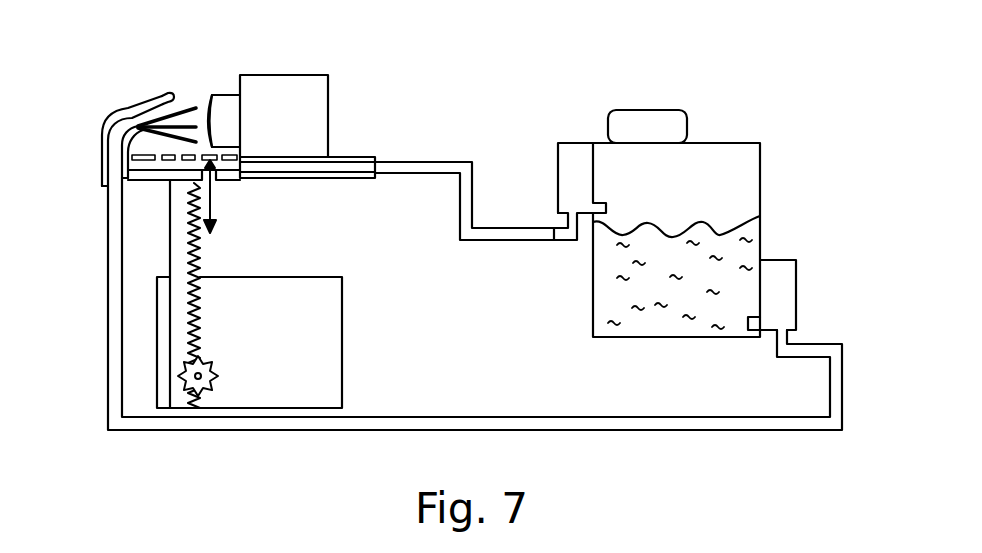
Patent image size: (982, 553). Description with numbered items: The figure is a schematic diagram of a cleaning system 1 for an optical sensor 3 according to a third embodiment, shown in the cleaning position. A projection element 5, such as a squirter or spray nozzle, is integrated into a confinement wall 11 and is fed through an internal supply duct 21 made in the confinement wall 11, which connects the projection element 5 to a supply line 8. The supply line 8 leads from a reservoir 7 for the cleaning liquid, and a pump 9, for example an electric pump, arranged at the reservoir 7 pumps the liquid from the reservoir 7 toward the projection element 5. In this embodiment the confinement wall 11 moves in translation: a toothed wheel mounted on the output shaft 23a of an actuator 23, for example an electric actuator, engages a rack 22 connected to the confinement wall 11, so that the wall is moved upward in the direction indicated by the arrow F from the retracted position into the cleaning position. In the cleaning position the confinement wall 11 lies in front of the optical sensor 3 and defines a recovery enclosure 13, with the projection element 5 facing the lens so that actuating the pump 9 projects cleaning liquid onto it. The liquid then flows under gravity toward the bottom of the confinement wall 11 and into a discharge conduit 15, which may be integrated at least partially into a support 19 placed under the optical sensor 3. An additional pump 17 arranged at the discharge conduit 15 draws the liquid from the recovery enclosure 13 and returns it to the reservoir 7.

The cleaning system 1 is at (488, 286).
The optical sensor 3 is at (317, 107).
The projection element 5 is at (125, 120).
The reservoir 7 is at (602, 304).
The supply line 8 is at (583, 424).
The pump 9 is at (778, 270).
The confinement wall 11 is at (157, 97).
The recovery enclosure 13 is at (120, 150).
The discharge conduit 15 is at (493, 233).
The additional pump 17 is at (577, 157).
The support 19 is at (363, 178).
The internal supply duct 21 is at (132, 154).
The rack 22 is at (183, 227).
The actuator 23 is at (332, 355).
The output shaft 23a is at (187, 368).
The arrow F is at (212, 205).